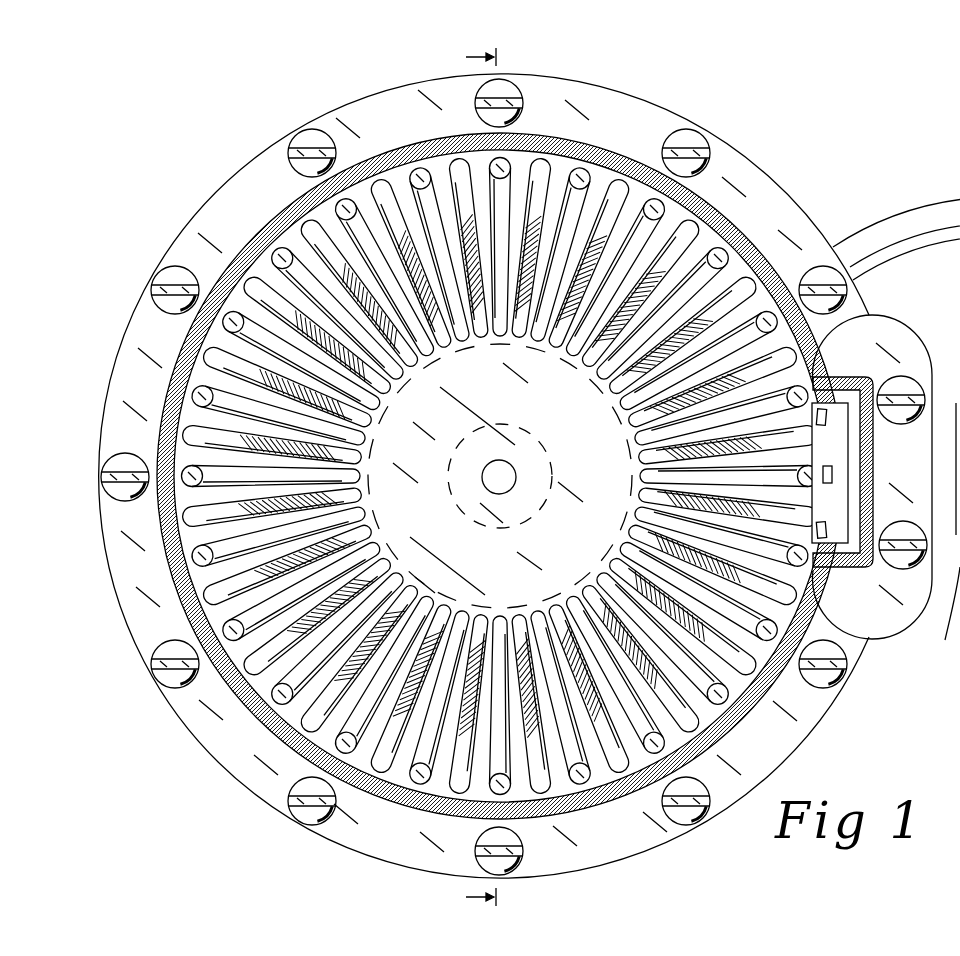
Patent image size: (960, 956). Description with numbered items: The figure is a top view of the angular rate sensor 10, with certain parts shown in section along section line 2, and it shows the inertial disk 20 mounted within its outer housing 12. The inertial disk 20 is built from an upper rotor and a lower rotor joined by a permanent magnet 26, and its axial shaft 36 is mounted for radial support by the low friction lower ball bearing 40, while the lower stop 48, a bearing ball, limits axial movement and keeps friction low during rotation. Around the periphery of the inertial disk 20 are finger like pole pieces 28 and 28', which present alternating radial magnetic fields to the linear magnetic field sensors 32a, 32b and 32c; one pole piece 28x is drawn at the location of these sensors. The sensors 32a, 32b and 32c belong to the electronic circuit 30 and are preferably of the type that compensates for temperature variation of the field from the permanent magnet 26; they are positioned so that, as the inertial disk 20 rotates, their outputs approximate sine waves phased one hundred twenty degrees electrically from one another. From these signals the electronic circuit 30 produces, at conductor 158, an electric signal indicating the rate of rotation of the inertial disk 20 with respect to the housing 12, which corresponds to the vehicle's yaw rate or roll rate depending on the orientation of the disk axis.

The section line 2- 2 is at (470, 479).
The angular rate sensor 10 is at (716, 124).
The outer housing 12 is at (617, 112).
The inertial disk 20 is at (677, 201).
The permanent magnet 26 is at (560, 400).
The finger like pole piece 28 is at (505, 475).
The finger like pole piece 28' is at (733, 290).
The spring finger at sensor 28x is at (805, 473).
The electronic circuit 30 is at (840, 407).
The linear magnetic field sensor 32a is at (828, 487).
The linear magnetic field sensor 32b is at (823, 538).
The linear magnetic field sensor 32c is at (819, 408).
The axial shaft 36 is at (513, 464).
The lower ball bearing 40 is at (945, 640).
The lower stop 48 is at (951, 448).
The conductor 158 is at (888, 233).